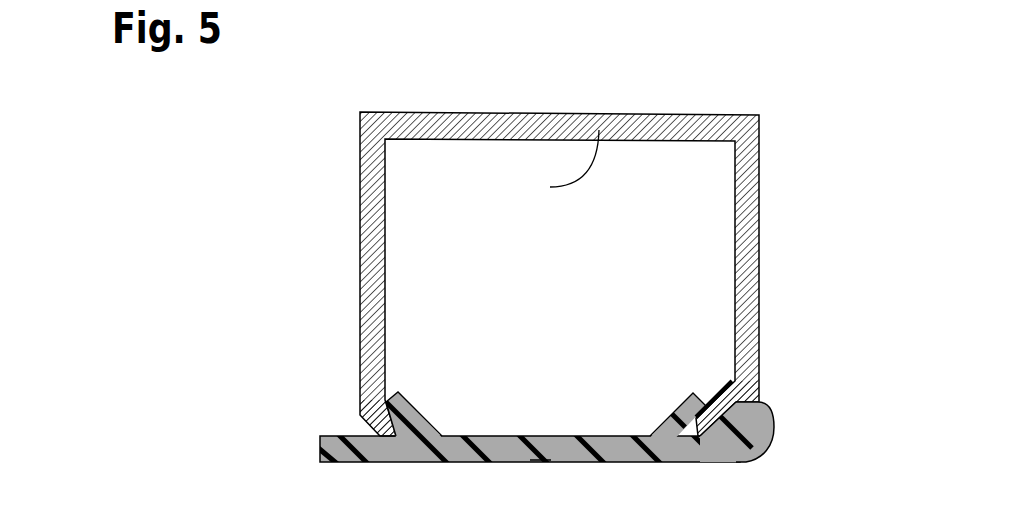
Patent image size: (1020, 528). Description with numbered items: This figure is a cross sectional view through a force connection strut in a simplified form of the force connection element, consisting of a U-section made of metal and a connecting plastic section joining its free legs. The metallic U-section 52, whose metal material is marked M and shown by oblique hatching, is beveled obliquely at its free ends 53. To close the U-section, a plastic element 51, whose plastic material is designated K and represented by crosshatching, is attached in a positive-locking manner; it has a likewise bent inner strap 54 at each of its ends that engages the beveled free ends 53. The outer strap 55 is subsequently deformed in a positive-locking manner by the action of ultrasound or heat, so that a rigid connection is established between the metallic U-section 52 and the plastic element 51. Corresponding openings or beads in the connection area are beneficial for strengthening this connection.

The plastic element 51 is at (530, 419).
The metallic U-section 52 is at (559, 243).
The free ends 53 is at (385, 415).
The inner strap 54 is at (397, 392).
The outer strap 55 is at (755, 448).
The metal M is at (562, 165).
The plastic K is at (540, 449).